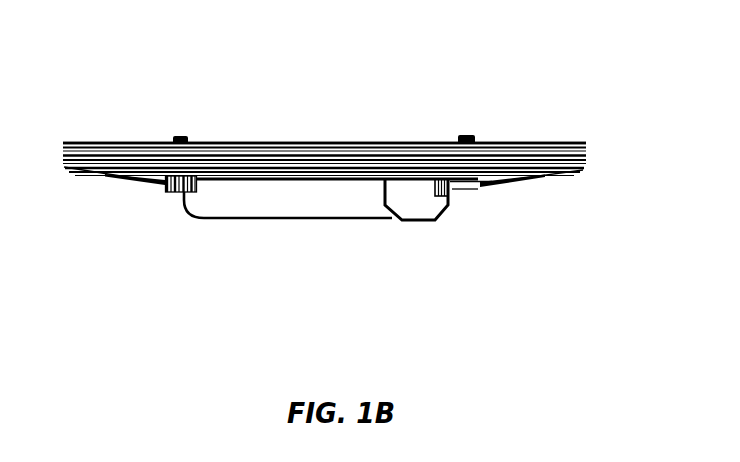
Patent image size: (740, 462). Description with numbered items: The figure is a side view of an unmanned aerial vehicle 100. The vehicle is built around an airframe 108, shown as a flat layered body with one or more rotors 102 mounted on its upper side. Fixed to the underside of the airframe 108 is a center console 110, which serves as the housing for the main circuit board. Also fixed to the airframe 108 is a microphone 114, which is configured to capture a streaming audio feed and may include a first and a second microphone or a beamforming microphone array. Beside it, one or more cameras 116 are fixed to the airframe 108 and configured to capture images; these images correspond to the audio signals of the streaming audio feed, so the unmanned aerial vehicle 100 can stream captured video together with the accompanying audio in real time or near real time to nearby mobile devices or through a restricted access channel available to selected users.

The unmanned aerial vehicle 100 is at (579, 85).
The rotor 102 is at (182, 136).
The airframe 108 is at (130, 145).
The center console 110 is at (203, 219).
The microphone 114 is at (449, 204).
The camera 116 is at (442, 220).